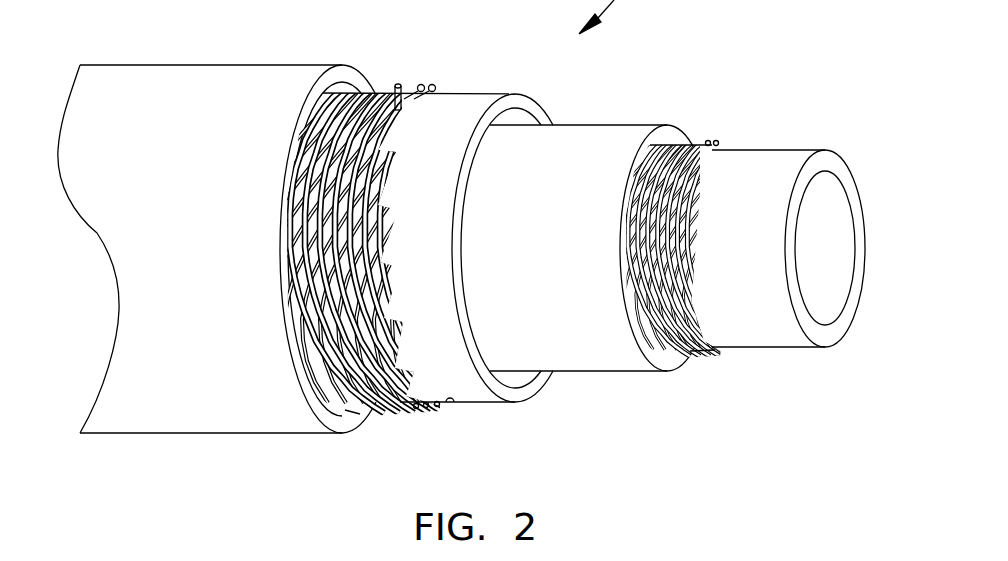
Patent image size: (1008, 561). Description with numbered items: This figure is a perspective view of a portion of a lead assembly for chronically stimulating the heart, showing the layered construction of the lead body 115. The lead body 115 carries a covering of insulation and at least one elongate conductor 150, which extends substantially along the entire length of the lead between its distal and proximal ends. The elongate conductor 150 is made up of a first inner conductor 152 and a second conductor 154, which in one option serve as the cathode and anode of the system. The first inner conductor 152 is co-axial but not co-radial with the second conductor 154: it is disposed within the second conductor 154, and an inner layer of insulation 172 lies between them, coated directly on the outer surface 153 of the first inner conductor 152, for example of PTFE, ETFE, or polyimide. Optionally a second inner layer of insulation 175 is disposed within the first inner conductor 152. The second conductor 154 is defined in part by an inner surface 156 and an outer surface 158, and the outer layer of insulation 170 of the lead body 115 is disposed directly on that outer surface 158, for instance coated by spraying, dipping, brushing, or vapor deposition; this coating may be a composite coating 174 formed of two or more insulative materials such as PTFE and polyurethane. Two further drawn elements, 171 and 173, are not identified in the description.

The lead body 115 is at (215, 65).
The composite coating 174 is at (148, 423).
The outer layer of insulation 170 is at (246, 433).
The elongate conductor 150 is at (433, 86).
The outer surface 158 is at (398, 83).
The second conductor 154 is at (392, 415).
The inner surface 156 is at (458, 405).
The intermediate tube outer surface 173 is at (486, 93).
The inner layer of insulation 172 is at (498, 404).
The inner tube 171 is at (580, 125).
The first inner conductor 152 is at (716, 346).
The outer surface 153 is at (702, 355).
The second inner layer of insulation 175 is at (848, 324).